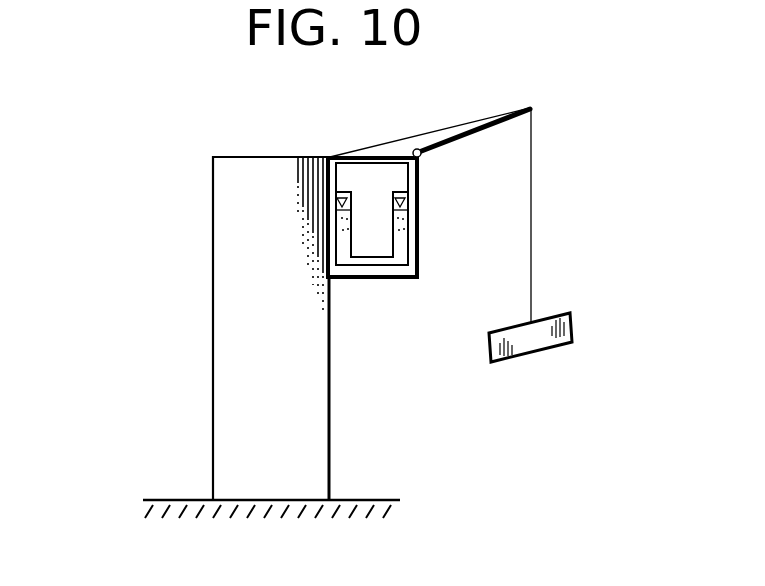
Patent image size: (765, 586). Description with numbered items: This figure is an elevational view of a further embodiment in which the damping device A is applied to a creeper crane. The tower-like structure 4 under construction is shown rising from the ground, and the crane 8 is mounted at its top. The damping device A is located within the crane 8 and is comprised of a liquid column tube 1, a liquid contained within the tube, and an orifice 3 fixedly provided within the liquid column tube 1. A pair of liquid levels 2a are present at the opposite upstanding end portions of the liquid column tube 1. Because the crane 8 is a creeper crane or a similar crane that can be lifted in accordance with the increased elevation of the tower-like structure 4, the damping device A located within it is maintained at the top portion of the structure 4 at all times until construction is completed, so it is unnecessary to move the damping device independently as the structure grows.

The tower-like structure 4 is at (211, 210).
The liquid column tube 1 is at (402, 187).
The orifice 3 is at (379, 257).
The liquid level 2a is at (337, 205).
The damping device A is at (411, 218).
The crane 8 is at (396, 158).